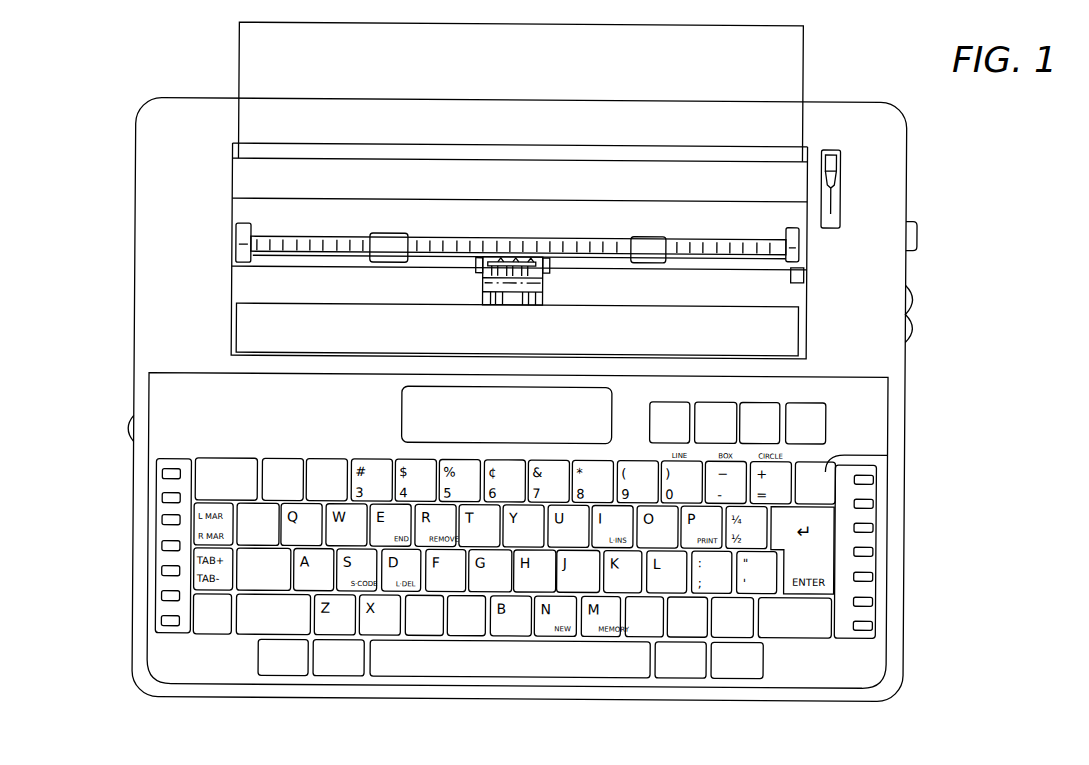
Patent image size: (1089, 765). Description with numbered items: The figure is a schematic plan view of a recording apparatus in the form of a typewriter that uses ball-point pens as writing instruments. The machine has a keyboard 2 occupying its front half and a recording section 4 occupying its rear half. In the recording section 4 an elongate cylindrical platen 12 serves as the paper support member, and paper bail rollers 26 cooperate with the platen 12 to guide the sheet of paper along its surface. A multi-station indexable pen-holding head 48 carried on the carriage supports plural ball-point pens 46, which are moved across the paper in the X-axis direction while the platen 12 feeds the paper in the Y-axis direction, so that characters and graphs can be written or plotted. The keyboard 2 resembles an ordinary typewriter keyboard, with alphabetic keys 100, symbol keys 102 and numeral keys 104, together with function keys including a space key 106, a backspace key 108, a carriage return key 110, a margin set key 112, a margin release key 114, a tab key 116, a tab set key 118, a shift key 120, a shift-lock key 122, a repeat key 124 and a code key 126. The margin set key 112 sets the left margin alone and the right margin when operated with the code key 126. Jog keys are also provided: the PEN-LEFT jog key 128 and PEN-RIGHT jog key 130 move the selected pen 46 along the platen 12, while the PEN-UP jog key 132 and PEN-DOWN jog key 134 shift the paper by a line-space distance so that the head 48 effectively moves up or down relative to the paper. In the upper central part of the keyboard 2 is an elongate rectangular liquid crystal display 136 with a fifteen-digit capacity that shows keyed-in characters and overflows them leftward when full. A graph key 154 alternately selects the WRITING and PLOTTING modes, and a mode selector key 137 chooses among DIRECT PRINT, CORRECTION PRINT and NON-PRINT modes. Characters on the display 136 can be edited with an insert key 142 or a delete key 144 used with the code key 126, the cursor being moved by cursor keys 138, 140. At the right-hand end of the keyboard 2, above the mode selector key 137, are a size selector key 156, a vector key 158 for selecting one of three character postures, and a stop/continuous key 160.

The keyboard 2 is at (911, 511).
The recording section 4 is at (924, 193).
The platen 12 is at (558, 214).
The paper bail rollers 26 is at (398, 243).
The ball-point pens 46 is at (511, 305).
The pen-holding head 48 is at (553, 289).
The alphabetic keys 100 is at (430, 630).
The symbol keys 102 is at (812, 465).
The numeral keys 104 is at (292, 462).
The space key 106 is at (537, 660).
The backspace key 108 is at (889, 453).
The carriage return key 110 is at (876, 575).
The margin set key 112 is at (185, 520).
The margin release key 114 is at (227, 462).
The tab key 116 is at (253, 505).
The tab set key 118 is at (190, 577).
The shift key 120 is at (255, 622).
The shift-lock key 122 is at (237, 591).
The repeat key 124 is at (338, 676).
The code key 126 is at (205, 630).
The PEN-LEFT jog key 128 is at (665, 401).
The PEN-RIGHT jog key 130 is at (712, 401).
The PEN-UP jog key 132 is at (758, 401).
The PEN-DOWN jog key 134 is at (816, 401).
The liquid crystal display 136 is at (537, 395).
The mode selector key 137 is at (876, 625).
The cursor key 138 is at (681, 664).
The cursor key 140 is at (750, 667).
The insert key 142 is at (684, 640).
The delete key 144 is at (760, 622).
The graph key 154 is at (290, 670).
The size selector key 156 is at (876, 548).
The vector key 158 is at (876, 600).
The stop/continuous key 160 is at (876, 478).